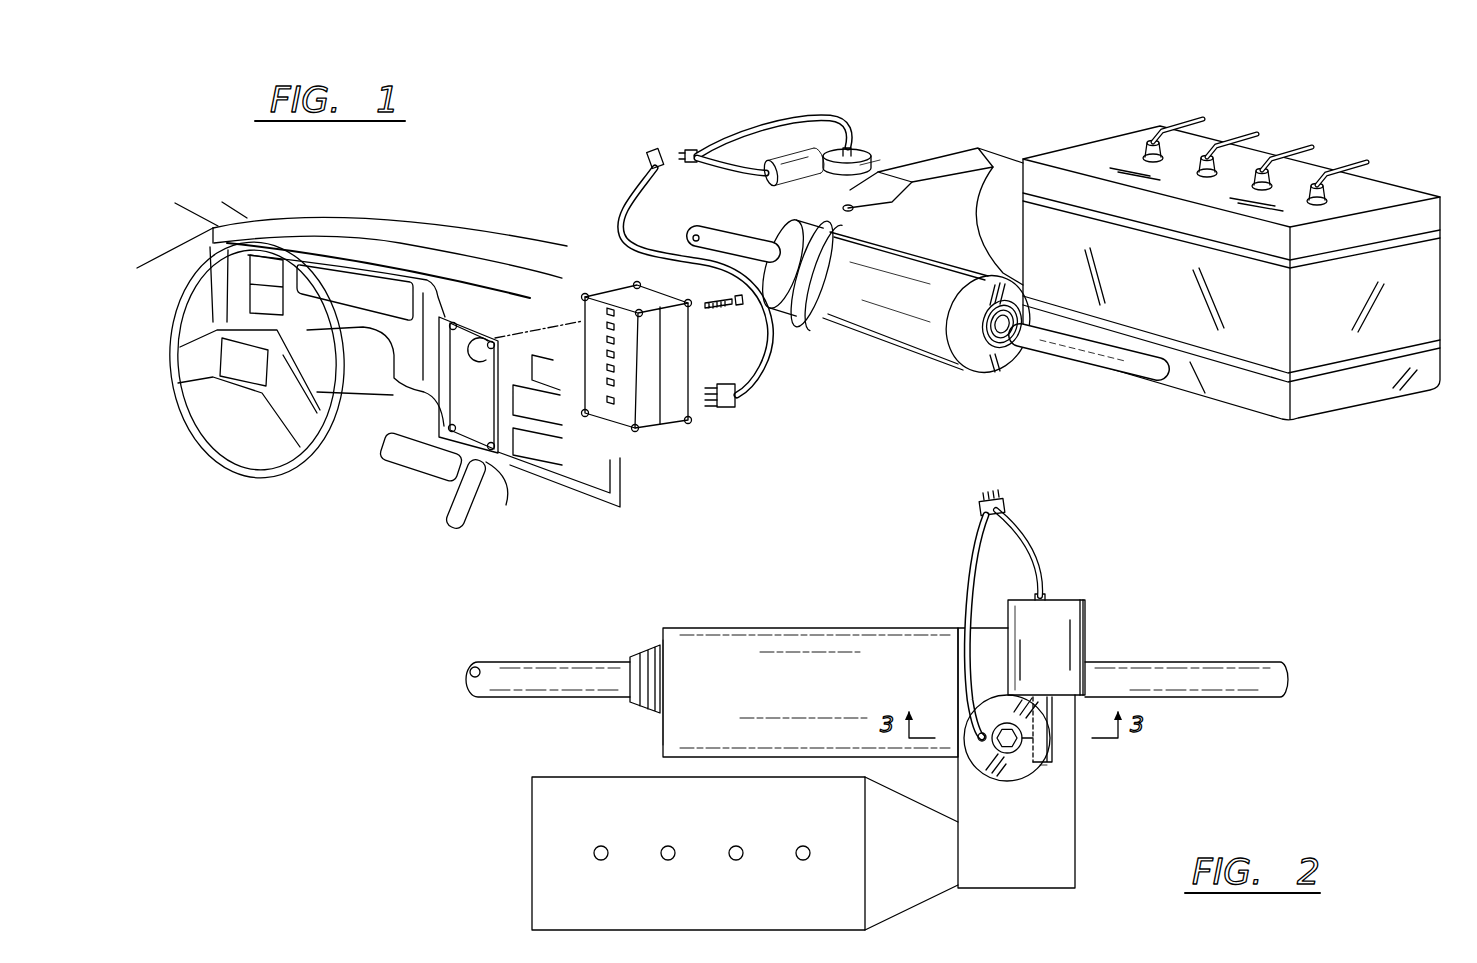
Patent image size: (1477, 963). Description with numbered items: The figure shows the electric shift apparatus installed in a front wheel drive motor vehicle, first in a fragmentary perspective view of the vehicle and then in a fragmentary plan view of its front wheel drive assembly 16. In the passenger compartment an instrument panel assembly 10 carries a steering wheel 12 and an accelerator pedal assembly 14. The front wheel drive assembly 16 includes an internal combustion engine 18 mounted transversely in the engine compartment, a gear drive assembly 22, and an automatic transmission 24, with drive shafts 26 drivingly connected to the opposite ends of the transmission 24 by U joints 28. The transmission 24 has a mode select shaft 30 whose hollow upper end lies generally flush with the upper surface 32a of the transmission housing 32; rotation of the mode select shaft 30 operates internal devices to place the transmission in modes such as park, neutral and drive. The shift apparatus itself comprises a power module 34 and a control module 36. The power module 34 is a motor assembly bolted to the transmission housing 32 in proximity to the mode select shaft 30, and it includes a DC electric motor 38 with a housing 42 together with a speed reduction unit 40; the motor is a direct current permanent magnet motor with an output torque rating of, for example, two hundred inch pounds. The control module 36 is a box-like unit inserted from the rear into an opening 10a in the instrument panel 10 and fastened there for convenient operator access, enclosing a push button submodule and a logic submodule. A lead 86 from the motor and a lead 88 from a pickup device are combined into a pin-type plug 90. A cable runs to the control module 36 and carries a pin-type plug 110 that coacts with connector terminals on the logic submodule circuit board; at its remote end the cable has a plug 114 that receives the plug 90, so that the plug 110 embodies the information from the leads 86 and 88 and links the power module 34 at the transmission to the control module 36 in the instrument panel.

In FIG. 1, the instrument panel assembly 10 is at (474, 246).
In FIG. 1, the opening 10a is at (481, 337).
In FIG. 1, the steering wheel 12 is at (230, 467).
In FIG. 1, the accelerator pedal assembly 14 is at (440, 506).
In FIG. 1, the front wheel drive assembly 16 is at (1120, 133).
In FIG. 2, the internal combustion engine 18 is at (530, 865).
In FIG. 1, the gear drive assembly 22 is at (955, 160).
In FIG. 2, the gear drive assembly 22 is at (1023, 888).
In FIG. 1, the automatic transmission 24 is at (928, 319).
In FIG. 2, the automatic transmission 24 is at (858, 626).
In FIG. 1, the drive shafts 26 is at (727, 225).
In FIG. 2, the drive shafts 26 is at (520, 660).
In FIG. 1, the U joints 28 is at (1000, 357).
In FIG. 2, the U joints 28 is at (650, 650).
In FIG. 1, the mode select shaft 30 is at (843, 208).
In FIG. 1, the transmission housing 32 is at (796, 263).
In FIG. 2, the transmission housing 32 is at (828, 701).
In FIG. 1, the upper surface 32a is at (822, 226).
In FIG. 1, the power module 34 is at (876, 150).
In FIG. 2, the power module 34 is at (1013, 790).
In FIG. 1, the control module 36 is at (662, 437).
In FIG. 1, the DC electric motor 38 is at (795, 165).
In FIG. 2, the DC electric motor 38 is at (1087, 622).
In FIG. 1, the speed reduction unit 40 is at (838, 148).
In FIG. 2, the speed reduction unit 40 is at (1042, 770).
In FIG. 2, the housing 42 is at (1050, 665).
In FIG. 2, the lead 86 is at (1035, 575).
In FIG. 1, the lead 88 is at (800, 118).
In FIG. 2, the lead 88 is at (969, 590).
In FIG. 1, the pin-type plug 90 is at (692, 148).
In FIG. 2, the pin-type plug 90 is at (1004, 506).
In FIG. 1, the pin-type plug 110 is at (738, 400).
In FIG. 1, the plug 114 is at (652, 148).